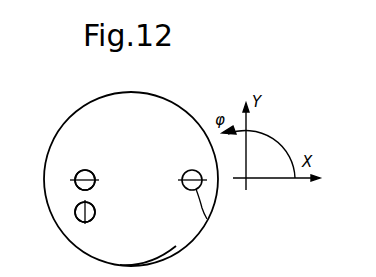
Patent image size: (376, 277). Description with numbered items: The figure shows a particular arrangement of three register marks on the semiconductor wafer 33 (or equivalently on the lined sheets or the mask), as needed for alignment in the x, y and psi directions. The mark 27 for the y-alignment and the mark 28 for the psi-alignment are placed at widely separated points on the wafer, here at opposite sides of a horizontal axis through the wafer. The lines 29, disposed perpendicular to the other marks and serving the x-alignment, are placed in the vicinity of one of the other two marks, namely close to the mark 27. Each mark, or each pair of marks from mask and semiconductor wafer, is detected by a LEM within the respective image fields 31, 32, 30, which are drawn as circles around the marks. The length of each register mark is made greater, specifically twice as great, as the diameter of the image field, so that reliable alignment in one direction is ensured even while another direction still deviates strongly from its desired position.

The mark for the y-alignment 27 is at (72, 180).
The mark for the psi-alignment 28 is at (216, 184).
The lines for the x-alignment 29 is at (80, 224).
The image field 30 is at (78, 220).
The image field 31 is at (76, 173).
The image field 32 is at (207, 219).
The semiconductor wafer 33 is at (172, 242).